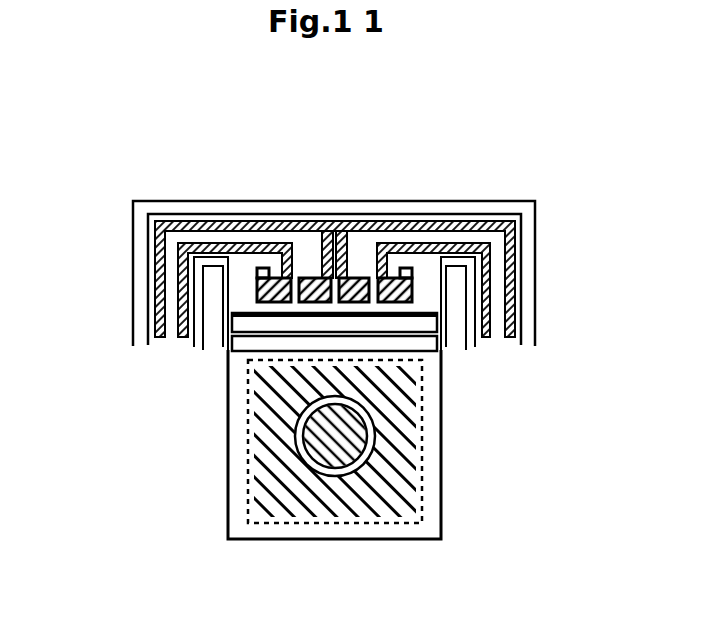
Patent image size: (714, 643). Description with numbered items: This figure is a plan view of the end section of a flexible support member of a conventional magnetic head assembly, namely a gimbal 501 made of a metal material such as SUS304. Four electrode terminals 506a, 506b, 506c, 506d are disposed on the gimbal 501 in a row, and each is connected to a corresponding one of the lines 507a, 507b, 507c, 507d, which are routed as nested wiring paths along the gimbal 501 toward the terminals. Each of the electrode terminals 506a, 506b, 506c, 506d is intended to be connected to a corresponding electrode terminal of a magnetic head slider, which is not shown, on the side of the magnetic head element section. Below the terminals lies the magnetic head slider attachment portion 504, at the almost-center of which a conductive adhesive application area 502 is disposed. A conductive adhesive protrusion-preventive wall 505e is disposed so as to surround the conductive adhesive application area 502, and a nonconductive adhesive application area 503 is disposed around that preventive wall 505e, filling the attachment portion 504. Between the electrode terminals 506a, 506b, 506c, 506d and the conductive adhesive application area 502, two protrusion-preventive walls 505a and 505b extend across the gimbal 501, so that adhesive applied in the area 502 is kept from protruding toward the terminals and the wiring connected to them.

The gimbal 501 is at (445, 533).
The conductive adhesive application area 502 is at (377, 452).
The nonconductive adhesive application area 503 is at (383, 383).
The magnetic head slider attachment portion 504 is at (303, 523).
The protrusion-preventive wall 505a is at (232, 322).
The protrusion-preventive wall 505b is at (230, 343).
The conductive adhesive protrusion-preventive wall 505e is at (318, 452).
The electrode terminal 506a is at (268, 268).
The electrode terminal 506b is at (312, 278).
The electrode terminal 506c is at (357, 278).
The electrode terminal 506d is at (395, 268).
The line 507a is at (183, 318).
The line 507b is at (157, 264).
The line 507c is at (510, 260).
The line 507d is at (486, 305).